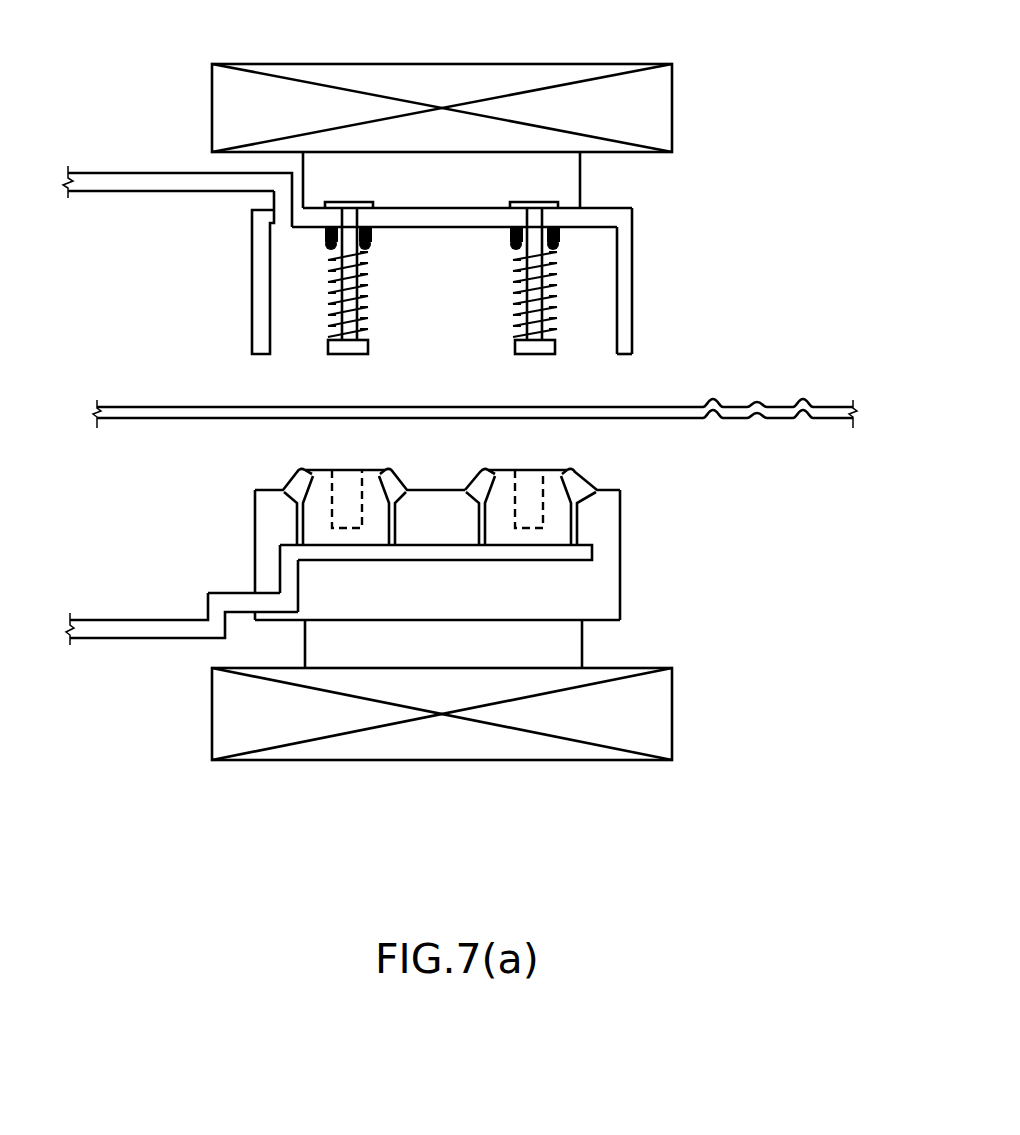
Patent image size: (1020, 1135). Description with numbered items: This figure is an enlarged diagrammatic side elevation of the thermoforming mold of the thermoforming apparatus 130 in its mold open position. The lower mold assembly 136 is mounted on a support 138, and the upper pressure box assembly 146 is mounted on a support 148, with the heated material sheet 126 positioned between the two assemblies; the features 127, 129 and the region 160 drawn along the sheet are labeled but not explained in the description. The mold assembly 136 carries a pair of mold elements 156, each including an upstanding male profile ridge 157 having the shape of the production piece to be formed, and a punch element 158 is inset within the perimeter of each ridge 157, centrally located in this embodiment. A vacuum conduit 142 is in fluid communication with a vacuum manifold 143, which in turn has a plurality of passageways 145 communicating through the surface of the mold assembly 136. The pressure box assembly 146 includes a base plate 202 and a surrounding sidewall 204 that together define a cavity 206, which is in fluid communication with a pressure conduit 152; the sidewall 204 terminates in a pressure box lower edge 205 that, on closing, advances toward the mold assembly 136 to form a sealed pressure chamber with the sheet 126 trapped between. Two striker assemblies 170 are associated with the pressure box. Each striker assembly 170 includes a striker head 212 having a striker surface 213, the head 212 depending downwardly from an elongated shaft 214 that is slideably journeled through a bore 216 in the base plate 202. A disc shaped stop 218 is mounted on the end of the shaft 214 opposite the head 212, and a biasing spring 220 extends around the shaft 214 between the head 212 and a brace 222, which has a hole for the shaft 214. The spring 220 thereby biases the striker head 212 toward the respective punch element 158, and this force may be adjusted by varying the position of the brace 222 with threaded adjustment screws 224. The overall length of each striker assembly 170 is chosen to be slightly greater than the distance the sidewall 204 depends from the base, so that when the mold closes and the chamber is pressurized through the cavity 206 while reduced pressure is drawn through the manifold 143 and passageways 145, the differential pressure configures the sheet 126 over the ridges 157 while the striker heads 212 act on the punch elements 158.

The support 148 is at (495, 78).
The thermoforming apparatus 130 is at (748, 170).
The pressure conduit 152 is at (140, 177).
The surrounding sidewall 204 is at (257, 240).
The base plate 202 is at (598, 215).
The pressure box assembly 146 is at (625, 250).
The pressure box lower edge 205 is at (633, 360).
The disc shaped stop 218 is at (347, 203).
The bore 216 is at (357, 212).
The brace 222 is at (373, 228).
The threaded adjustment screws 224 is at (372, 246).
The elongated shaft 214 is at (333, 287).
The striker head 212 is at (325, 333).
The biasing spring 220 is at (363, 317).
The striker surface 213 is at (352, 354).
The striker assembly 170 is at (383, 297).
The cavity 206 is at (465, 334).
The upper surface of web 127 is at (150, 407).
The sheet 126 is at (130, 420).
The web edge 129 is at (228, 420).
The corrugated portion 160 is at (760, 377).
The mold element 156 is at (300, 470).
The upstanding male profile ridge 157 is at (392, 470).
The punch element 158 is at (350, 508).
The passageways 145 is at (297, 520).
The vacuum manifold 143 is at (557, 560).
The mold assembly 136 is at (615, 575).
The vacuum conduit 142 is at (123, 633).
The support 138 is at (440, 752).